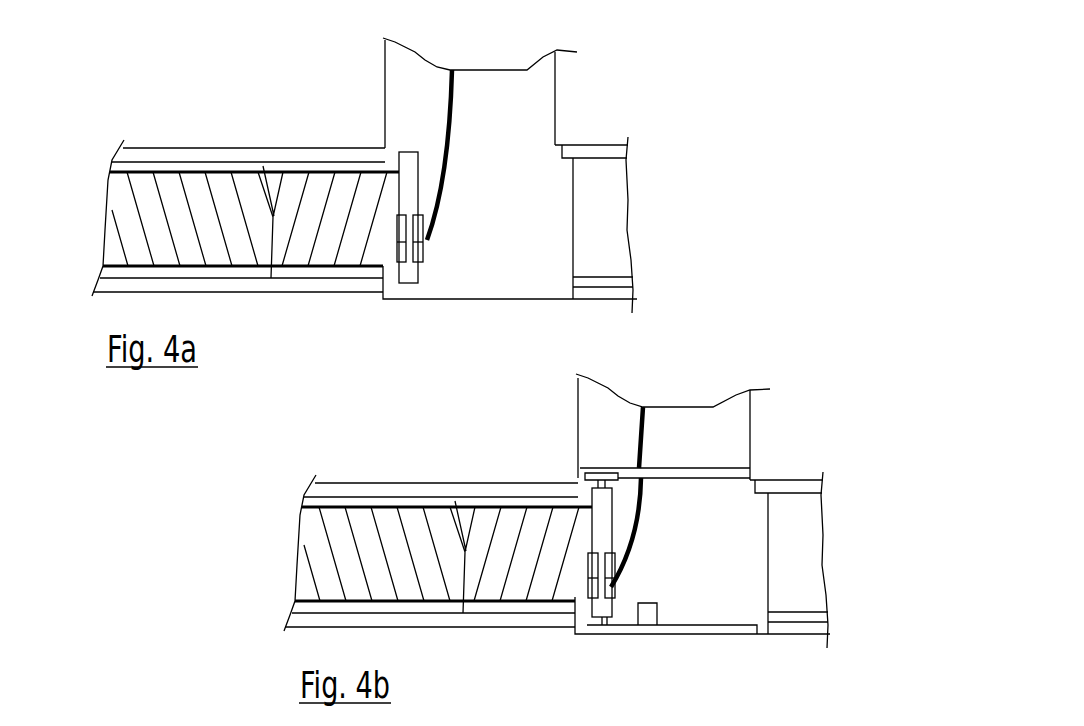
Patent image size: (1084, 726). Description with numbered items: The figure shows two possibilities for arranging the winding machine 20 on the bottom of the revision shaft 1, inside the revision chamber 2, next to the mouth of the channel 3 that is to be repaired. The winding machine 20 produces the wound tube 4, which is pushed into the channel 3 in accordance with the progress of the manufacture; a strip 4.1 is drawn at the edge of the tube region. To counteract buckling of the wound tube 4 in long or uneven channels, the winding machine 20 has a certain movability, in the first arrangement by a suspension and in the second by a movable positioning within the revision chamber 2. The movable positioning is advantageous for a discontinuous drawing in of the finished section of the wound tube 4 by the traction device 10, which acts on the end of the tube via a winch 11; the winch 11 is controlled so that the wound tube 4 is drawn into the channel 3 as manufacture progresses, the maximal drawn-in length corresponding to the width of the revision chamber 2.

In FIG. 4a, the revision shaft 1 is at (521, 116).
In FIG. 4b, the revision shaft 1 is at (714, 450).
In FIG. 4a, the revision chamber 2 is at (532, 240).
In FIG. 4b, the revision chamber 2 is at (724, 575).
In FIG. 4a, the channel 3 is at (275, 157).
In FIG. 4b, the channel 3 is at (467, 492).
In FIG. 4a, the wound tube 4 is at (184, 233).
In FIG. 4b, the wound tube 4 is at (376, 568).
In FIG. 4a, the sealing strip 4.1 is at (452, 95).
In FIG. 4b, the sealing strip 4.1 is at (643, 432).
In FIG. 4a, the traction device 10 is at (425, 200).
In FIG. 4b, the traction device 10 is at (618, 535).
In FIG. 4a, the winch 11 is at (405, 171).
In FIG. 4b, the winch 11 is at (602, 503).
In FIG. 4a, the winding machine 20 is at (417, 257).
In FIG. 4b, the winding machine 20 is at (610, 592).